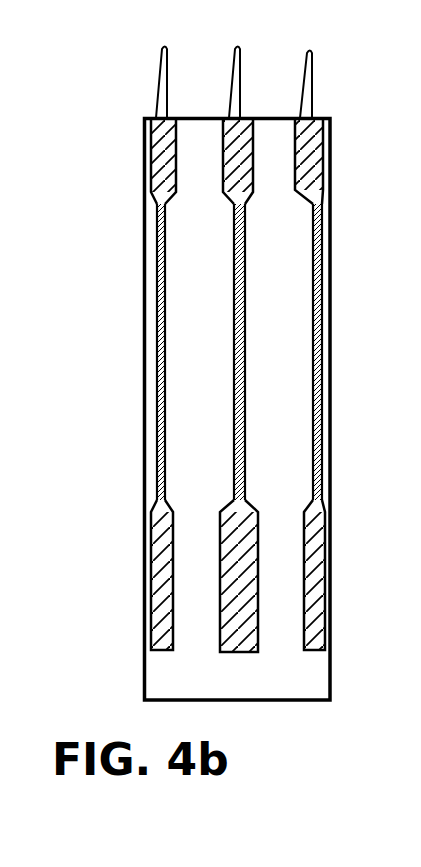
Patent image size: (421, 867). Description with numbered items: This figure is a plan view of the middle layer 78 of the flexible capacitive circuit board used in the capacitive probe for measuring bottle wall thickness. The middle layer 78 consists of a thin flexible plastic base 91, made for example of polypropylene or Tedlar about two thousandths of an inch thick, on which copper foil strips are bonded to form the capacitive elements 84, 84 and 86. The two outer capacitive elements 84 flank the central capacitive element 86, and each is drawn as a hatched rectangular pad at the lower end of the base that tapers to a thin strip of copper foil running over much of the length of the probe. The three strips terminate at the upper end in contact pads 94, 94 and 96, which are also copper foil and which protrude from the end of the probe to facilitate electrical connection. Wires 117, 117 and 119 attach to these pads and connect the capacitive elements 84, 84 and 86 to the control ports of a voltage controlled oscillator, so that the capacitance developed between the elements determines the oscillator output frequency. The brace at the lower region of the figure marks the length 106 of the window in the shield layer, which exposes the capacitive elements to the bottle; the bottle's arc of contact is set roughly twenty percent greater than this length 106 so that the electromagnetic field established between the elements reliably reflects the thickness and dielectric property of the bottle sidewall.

The middle layer 78 is at (239, 368).
The thin flexible plastic base 91 is at (330, 302).
The wires 117 is at (176, 70).
The wire 119 is at (249, 70).
The contact pads 94 is at (173, 206).
The contact pad 96 is at (247, 205).
The length of the window 106 is at (137, 510).
The capacitive elements 84 is at (170, 513).
The capacitive element 86 is at (248, 503).